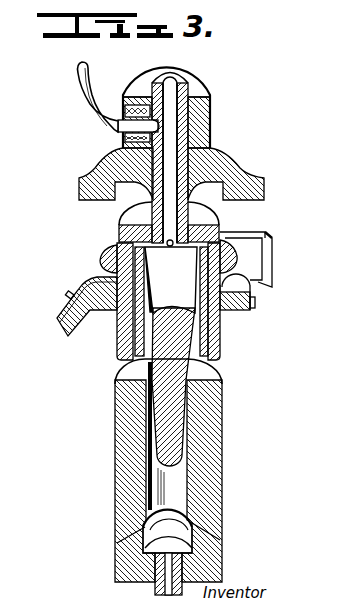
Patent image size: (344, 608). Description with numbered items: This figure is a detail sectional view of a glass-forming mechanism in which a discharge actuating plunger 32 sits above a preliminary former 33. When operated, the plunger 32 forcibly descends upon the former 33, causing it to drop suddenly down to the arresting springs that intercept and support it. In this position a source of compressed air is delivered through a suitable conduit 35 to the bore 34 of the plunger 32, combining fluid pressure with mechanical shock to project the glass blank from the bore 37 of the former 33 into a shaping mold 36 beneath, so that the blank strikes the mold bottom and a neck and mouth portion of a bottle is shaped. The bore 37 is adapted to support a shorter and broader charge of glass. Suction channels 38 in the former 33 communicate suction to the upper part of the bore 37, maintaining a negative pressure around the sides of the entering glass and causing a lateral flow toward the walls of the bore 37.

The discharge actuating plunger 32 is at (213, 220).
The preliminary former 33 is at (107, 258).
The bore of the plunger 34 is at (173, 140).
The conduit 35 is at (97, 118).
The shaping mold 36 is at (222, 428).
The bore of the former 37 is at (171, 356).
The suction channels 38 is at (95, 380).